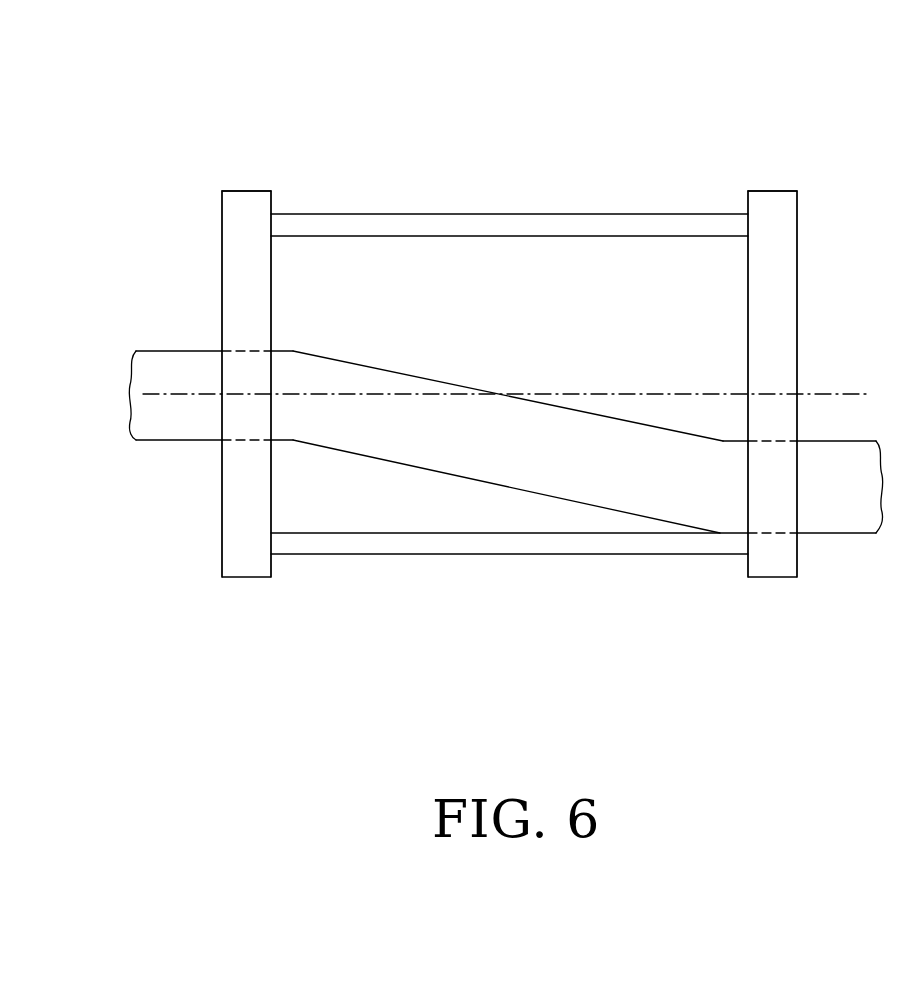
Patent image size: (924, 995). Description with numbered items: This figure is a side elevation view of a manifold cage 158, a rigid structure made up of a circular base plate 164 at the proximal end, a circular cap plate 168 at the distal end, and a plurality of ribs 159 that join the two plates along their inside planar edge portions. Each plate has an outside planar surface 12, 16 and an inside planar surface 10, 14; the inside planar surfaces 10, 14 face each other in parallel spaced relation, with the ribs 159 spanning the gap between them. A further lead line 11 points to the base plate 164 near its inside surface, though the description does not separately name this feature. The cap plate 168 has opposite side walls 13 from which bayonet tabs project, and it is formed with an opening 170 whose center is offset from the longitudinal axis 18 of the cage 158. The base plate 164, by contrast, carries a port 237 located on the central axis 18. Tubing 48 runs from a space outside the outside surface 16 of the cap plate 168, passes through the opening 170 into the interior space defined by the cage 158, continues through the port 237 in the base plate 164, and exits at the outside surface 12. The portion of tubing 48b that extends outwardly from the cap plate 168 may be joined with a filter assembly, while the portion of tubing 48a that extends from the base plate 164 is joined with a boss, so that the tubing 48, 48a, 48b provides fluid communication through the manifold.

The manifold cage 158 is at (218, 121).
The inside planar surface of base plate 10 is at (271, 267).
The first plate inner face 11 is at (240, 244).
The outside planar surface of base plate 12 is at (222, 262).
The circular base plate 164 is at (250, 218).
The side walls of cap plate 13 is at (772, 322).
The inside planar surface of cap plate 14 is at (748, 263).
The outside planar surface of cap plate 16 is at (797, 265).
The circular cap plate 168 is at (783, 202).
The ribs 159 is at (625, 225).
The longitudinal axis 18 is at (150, 392).
The tubing 48 is at (412, 375).
The tubing portion extending from base plate 48a is at (158, 441).
The tubing portion extending from cap plate 48b is at (827, 532).
The port 237 is at (271, 416).
The opening 170 is at (748, 495).